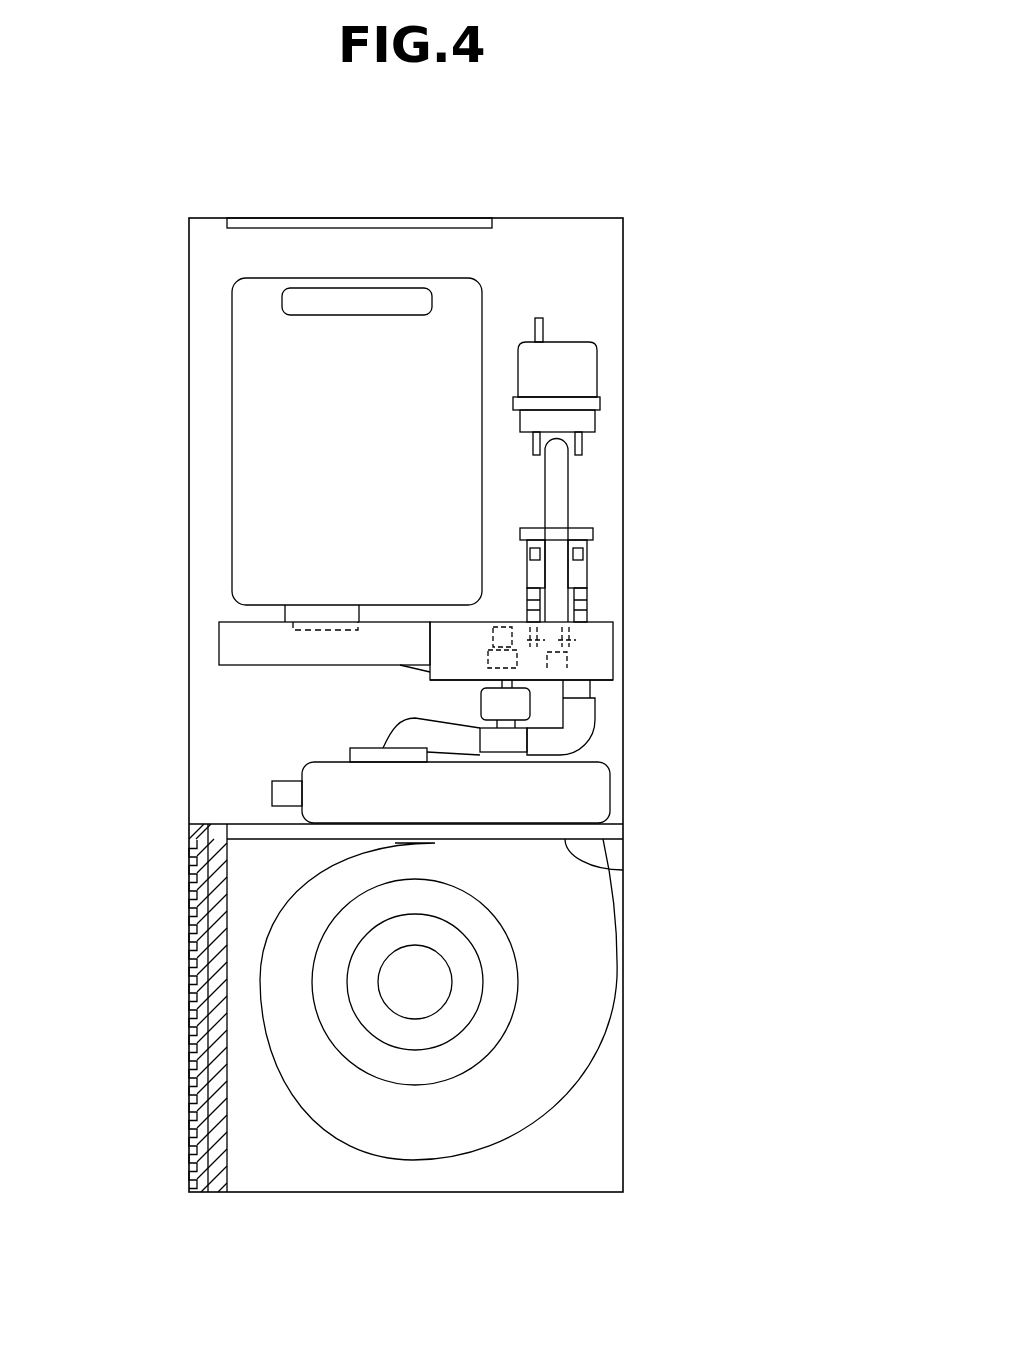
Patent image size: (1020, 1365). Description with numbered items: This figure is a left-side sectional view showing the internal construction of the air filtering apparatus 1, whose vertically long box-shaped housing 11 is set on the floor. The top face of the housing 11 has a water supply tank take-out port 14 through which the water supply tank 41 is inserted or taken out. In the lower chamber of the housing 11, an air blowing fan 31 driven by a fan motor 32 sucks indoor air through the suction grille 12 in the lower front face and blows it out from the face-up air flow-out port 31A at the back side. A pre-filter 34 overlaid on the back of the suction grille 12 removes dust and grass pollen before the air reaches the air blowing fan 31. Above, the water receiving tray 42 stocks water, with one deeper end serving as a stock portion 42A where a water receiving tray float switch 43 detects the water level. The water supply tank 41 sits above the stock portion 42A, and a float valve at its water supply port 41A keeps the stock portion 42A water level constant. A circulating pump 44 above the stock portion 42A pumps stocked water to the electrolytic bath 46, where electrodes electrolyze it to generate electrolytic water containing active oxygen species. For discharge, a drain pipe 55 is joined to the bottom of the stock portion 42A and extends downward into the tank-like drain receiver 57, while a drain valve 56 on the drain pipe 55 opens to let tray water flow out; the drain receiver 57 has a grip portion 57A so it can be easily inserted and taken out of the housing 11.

The air filtering apparatus 1 is at (718, 158).
The housing 11 is at (600, 218).
The suction grille 12 is at (175, 1118).
The water supply tank take-out port 14 is at (465, 222).
The air blowing fan 31 is at (562, 1047).
The air flow-out port 31A is at (567, 841).
The fan motor 32 is at (467, 990).
The pre-filter 34 is at (215, 1160).
The water supply tank 41 is at (245, 407).
The water supply port 41A is at (292, 641).
The water receiving tray 42 is at (219, 650).
The stock portion 42A is at (597, 675).
The water receiving tray float switch 43 is at (577, 662).
The circulating pump 44 is at (587, 618).
The electrolytic bath 46 is at (578, 373).
The drain pipe 55 is at (583, 713).
The drain valve 56 is at (522, 713).
The drain receiver 57 is at (588, 812).
The grip portion 57A is at (278, 791).